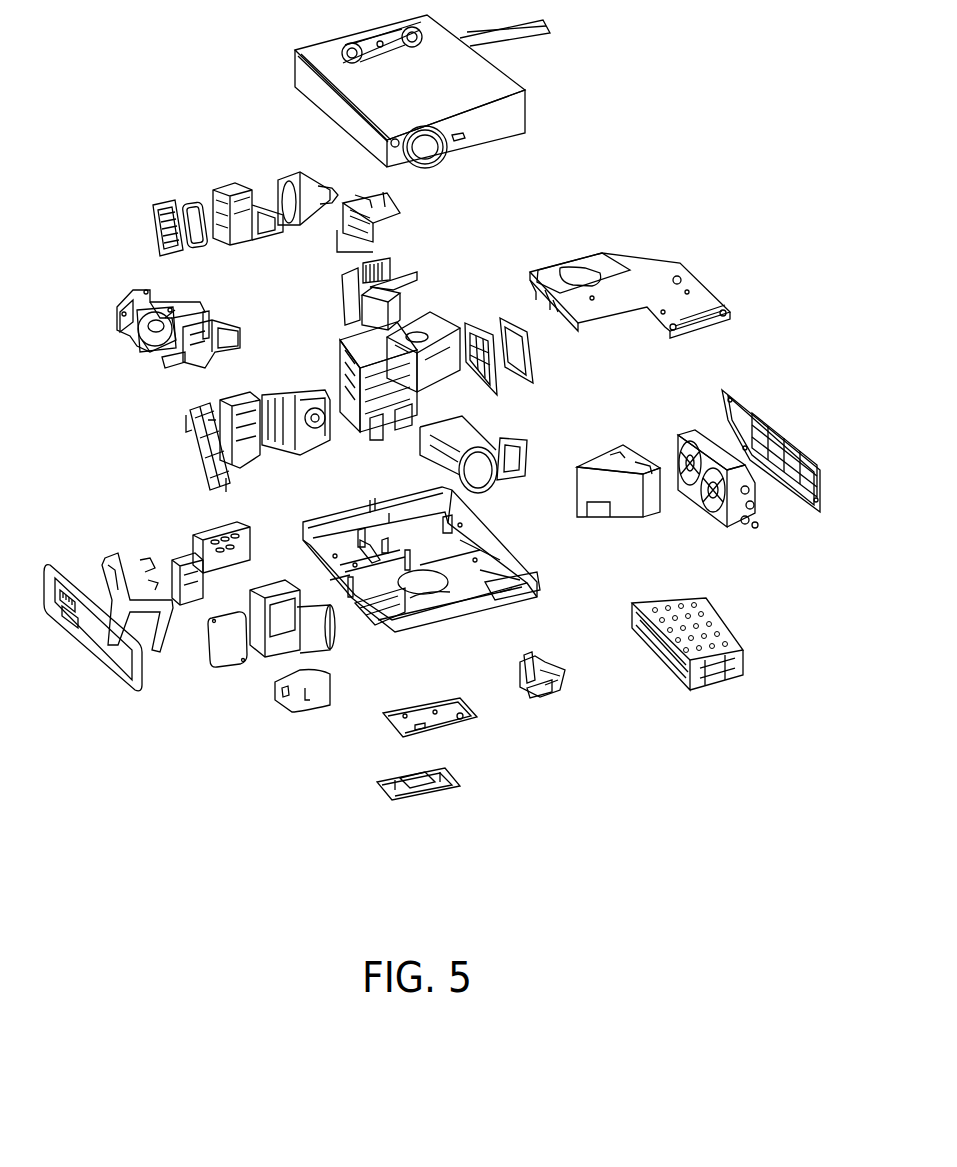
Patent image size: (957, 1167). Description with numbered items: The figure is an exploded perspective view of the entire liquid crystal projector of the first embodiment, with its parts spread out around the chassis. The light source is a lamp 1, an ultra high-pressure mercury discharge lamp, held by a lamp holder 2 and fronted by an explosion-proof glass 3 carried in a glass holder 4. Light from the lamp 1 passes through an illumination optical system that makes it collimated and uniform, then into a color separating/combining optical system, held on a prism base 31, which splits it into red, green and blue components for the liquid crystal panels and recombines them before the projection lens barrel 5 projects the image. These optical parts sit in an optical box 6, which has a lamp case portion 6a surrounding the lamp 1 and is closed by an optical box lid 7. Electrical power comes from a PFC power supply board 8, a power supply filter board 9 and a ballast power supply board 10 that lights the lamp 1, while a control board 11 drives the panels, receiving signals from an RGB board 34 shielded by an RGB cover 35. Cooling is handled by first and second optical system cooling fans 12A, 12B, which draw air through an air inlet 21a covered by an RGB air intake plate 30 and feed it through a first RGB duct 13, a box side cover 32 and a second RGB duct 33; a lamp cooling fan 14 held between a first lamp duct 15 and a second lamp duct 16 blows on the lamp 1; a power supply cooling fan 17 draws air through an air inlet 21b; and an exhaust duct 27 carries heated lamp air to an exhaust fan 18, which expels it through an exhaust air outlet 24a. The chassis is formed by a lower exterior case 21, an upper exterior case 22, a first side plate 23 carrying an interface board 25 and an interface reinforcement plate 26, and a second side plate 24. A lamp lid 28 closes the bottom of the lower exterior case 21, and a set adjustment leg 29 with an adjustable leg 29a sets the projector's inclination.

The light source lamp 1 is at (290, 176).
The lamp holder 2 is at (225, 187).
The explosion-proof glass 3 is at (193, 205).
The glass holder 4 is at (158, 205).
The projection lens barrel 5 is at (437, 440).
The optical box 6 is at (362, 427).
The lamp case portion 6a is at (442, 330).
The optical box lid 7 is at (403, 212).
The PFC power supply board 8 is at (677, 598).
The power supply filter board 9 is at (203, 533).
The ballast power supply board 10 is at (653, 660).
The control board 11 is at (672, 272).
The first optical system cooling fan 12A is at (229, 652).
The second optical system cooling fan 12B is at (278, 702).
The first RGB duct 13 is at (278, 597).
The lamp cooling fan 14 is at (140, 355).
The first lamp duct 15 is at (197, 367).
The second lamp duct 16 is at (133, 290).
The power supply cooling fan 17 is at (710, 507).
The exhaust fan 18 is at (685, 493).
The lower exterior case 21 is at (500, 570).
The air inlet 21a is at (413, 610).
The air inlet 21b is at (475, 613).
The upper exterior case 22 is at (510, 103).
The first side plate 23 is at (113, 670).
The second side plate 24 is at (733, 390).
The exhaust air outlet 24a is at (783, 503).
The interface board 25 is at (193, 600).
The interface reinforcement plate 26 is at (153, 657).
The exhaust duct 27 is at (590, 507).
The lamp lid 28 is at (467, 723).
The set adjustment leg 29 is at (557, 670).
The leg 29a is at (517, 687).
The RGB air intake plate 30 is at (453, 787).
The prism base 31 is at (285, 453).
The box side cover 32 is at (253, 463).
The second RGB duct 33 is at (197, 452).
The RGB board 34 is at (525, 385).
The RGB cover 35 is at (490, 390).